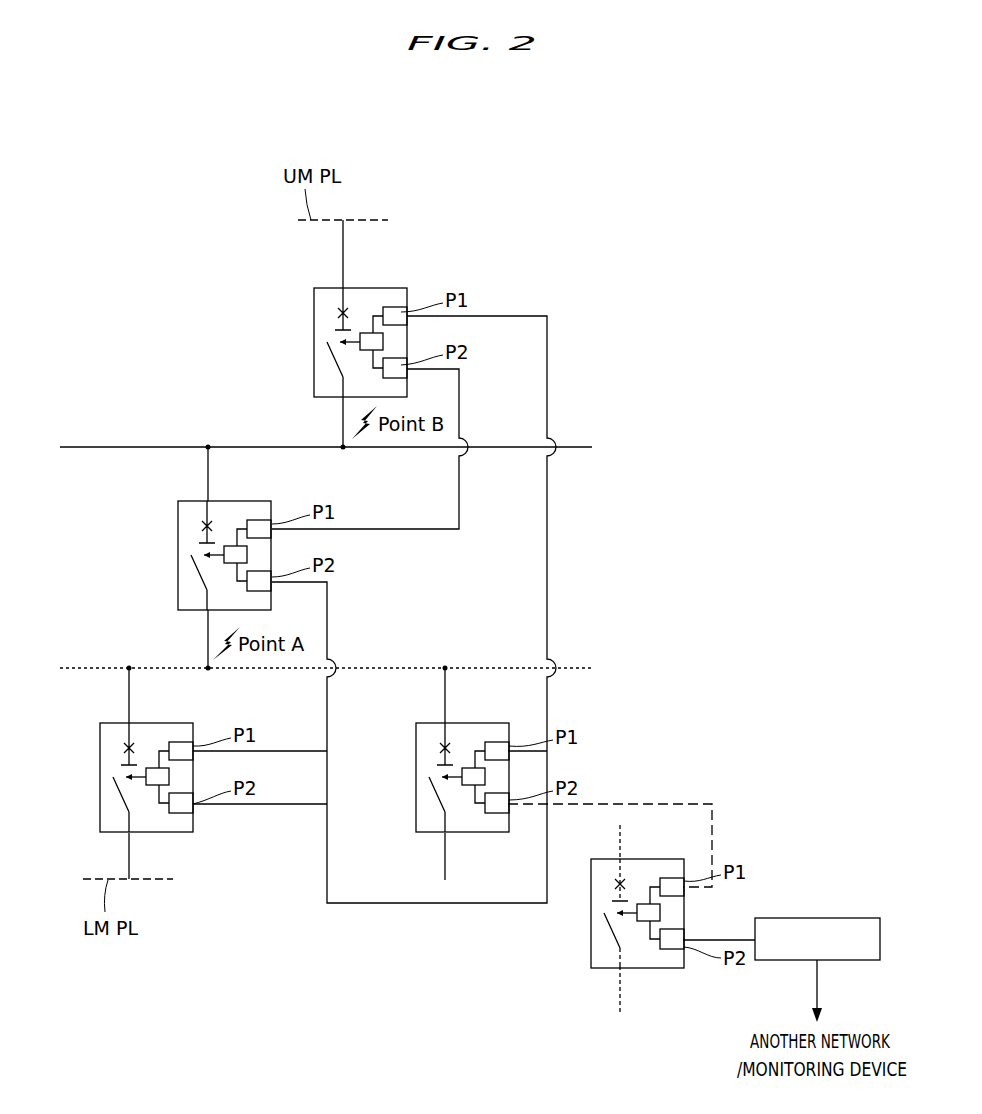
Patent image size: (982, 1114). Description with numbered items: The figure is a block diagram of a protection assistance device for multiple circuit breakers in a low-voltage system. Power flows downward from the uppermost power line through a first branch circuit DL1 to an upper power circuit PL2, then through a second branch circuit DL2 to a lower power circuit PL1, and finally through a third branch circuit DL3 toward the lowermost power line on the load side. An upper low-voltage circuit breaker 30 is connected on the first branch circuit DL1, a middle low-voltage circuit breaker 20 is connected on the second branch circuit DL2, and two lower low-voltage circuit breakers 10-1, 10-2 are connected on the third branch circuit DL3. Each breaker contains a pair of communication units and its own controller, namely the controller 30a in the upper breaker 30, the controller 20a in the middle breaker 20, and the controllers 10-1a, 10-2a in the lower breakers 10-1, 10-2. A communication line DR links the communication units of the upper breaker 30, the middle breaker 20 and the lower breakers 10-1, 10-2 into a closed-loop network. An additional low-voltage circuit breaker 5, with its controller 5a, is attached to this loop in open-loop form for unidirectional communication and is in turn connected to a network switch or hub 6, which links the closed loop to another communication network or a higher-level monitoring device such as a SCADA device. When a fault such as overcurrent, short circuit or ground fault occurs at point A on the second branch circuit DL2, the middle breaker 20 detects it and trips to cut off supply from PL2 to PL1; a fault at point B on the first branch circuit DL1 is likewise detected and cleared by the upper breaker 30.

The upper low-voltage circuit breaker 30 is at (349, 342).
The controller 30a is at (409, 334).
The middle low-voltage circuit breaker 20 is at (217, 555).
The controller 20a is at (275, 547).
The lower low-voltage circuit breaker 10-1 is at (137, 777).
The controller 10-1a is at (204, 769).
The lower low-voltage circuit breaker 10-2 is at (459, 781).
The controller 10-2a is at (522, 768).
The low-voltage circuit breaker 5 is at (632, 919).
The controller 5a is at (682, 907).
The network switch or hub 6 is at (839, 918).
The first branch circuit DL1 is at (345, 247).
The second branch circuit DL2 is at (208, 472).
The third branch circuit DL3 is at (129, 693).
The lower power circuit PL1 is at (500, 668).
The upper power circuit PL2 is at (500, 447).
The communication line DR is at (547, 358).